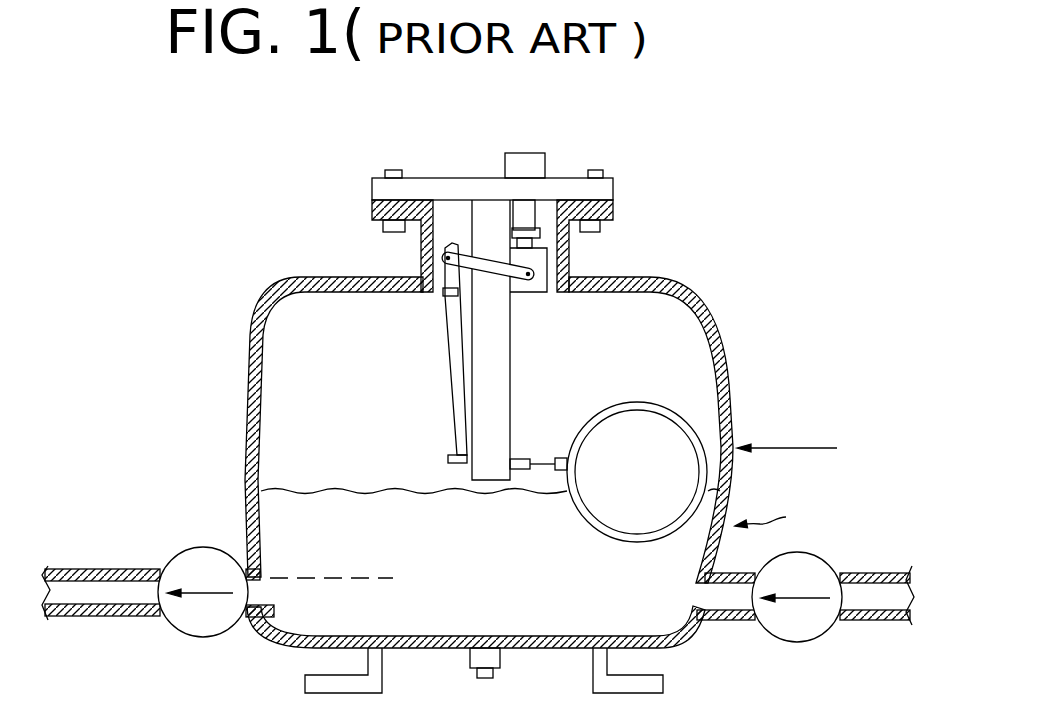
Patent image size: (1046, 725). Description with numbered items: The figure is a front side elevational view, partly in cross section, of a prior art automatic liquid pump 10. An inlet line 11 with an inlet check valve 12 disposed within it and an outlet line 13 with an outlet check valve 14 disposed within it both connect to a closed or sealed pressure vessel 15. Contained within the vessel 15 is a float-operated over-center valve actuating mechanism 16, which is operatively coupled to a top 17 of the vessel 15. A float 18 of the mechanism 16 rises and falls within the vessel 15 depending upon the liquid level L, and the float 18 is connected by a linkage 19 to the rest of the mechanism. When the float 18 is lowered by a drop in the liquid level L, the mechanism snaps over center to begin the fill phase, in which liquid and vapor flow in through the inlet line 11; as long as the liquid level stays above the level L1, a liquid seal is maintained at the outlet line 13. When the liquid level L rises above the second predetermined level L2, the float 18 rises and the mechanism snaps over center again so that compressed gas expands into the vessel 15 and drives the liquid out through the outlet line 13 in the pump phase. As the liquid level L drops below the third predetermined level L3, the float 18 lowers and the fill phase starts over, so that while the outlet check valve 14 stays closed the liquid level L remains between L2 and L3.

The automatic liquid pump 10 is at (697, 256).
The inlet line 11 is at (876, 621).
The inlet check valve 12 is at (802, 643).
The outlet line 13 is at (88, 568).
The outlet check valve 14 is at (203, 547).
The pressure vessel 15 is at (725, 344).
The float-operated over-center valve actuating mechanism 16 is at (398, 372).
The top 17 is at (613, 190).
The float 18 is at (652, 493).
The linkage 19 is at (445, 338).
The liquid level L is at (382, 491).
The first predetermined level L1 is at (335, 580).
The second predetermined level L2 is at (806, 453).
The third predetermined level L3 is at (775, 520).